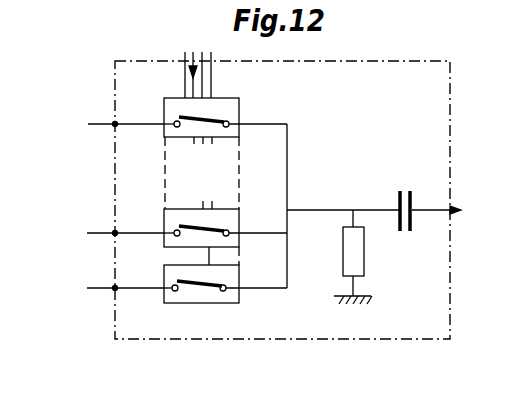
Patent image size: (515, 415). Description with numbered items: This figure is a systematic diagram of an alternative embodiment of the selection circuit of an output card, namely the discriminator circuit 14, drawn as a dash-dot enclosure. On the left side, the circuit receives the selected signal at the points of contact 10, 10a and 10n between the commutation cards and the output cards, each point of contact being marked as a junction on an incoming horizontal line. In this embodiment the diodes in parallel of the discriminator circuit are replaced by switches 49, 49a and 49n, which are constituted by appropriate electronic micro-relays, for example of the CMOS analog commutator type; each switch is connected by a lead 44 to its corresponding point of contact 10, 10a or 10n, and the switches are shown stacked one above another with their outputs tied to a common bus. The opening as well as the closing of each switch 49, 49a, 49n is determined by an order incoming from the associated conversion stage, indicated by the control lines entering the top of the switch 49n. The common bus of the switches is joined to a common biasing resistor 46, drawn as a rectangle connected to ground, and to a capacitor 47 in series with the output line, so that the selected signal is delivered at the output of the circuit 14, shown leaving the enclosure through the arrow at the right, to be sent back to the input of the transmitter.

The discriminator circuit 14 is at (438, 103).
The point of contact 10n is at (113, 123).
The point of contact 10a is at (113, 232).
The point of contact 10 is at (113, 287).
The switch 49n is at (236, 108).
The switch 49a is at (230, 220).
The switch 49 is at (230, 298).
The lead 44 is at (150, 290).
The common biasing resistor 46 is at (357, 262).
The capacitor 47 is at (413, 219).